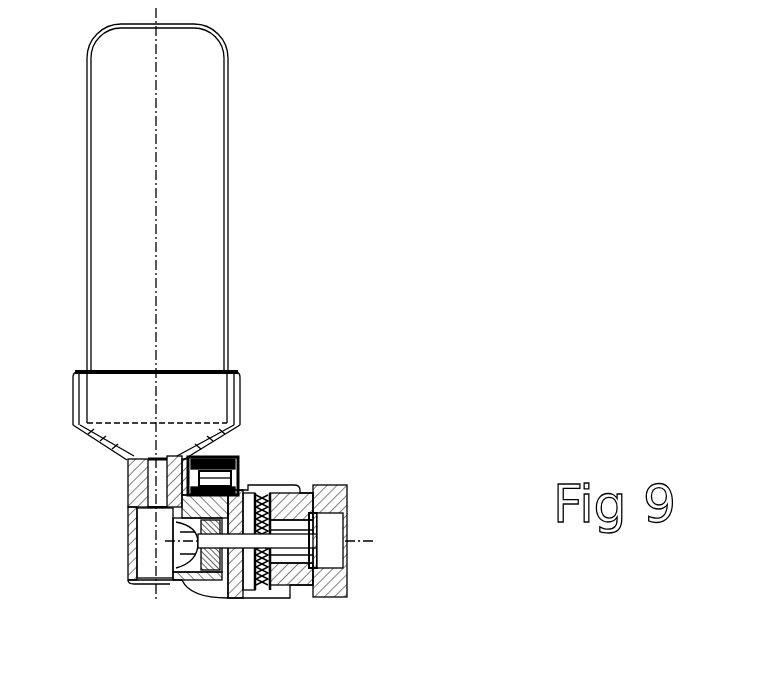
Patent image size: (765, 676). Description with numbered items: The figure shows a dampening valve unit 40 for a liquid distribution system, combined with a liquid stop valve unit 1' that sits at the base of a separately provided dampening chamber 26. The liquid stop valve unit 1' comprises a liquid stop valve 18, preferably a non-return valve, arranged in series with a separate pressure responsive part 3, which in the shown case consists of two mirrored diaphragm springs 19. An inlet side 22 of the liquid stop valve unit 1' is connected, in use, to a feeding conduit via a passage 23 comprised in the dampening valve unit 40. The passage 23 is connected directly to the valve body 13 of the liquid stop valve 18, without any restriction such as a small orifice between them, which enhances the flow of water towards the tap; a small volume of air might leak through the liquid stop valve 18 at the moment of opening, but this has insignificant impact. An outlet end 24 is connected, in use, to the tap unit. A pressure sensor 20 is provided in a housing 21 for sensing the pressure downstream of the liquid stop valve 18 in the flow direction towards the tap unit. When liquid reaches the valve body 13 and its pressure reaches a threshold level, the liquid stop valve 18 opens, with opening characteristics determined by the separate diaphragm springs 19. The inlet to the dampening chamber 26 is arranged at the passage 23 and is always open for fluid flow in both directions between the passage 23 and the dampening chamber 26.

The dampening valve unit 40 is at (350, 325).
The dampening chamber 26 is at (203, 278).
The valve body 13 is at (177, 542).
The passage 23 is at (130, 578).
The pressure sensor 20 is at (232, 457).
The liquid stop valve 18 is at (252, 475).
The housing 21 is at (288, 482).
The liquid stop valve unit 1' is at (302, 470).
The inlet side 22 is at (183, 583).
The diaphragm springs 19 is at (217, 582).
The pressure responsive part 3 is at (347, 557).
The outlet end 24 is at (342, 503).